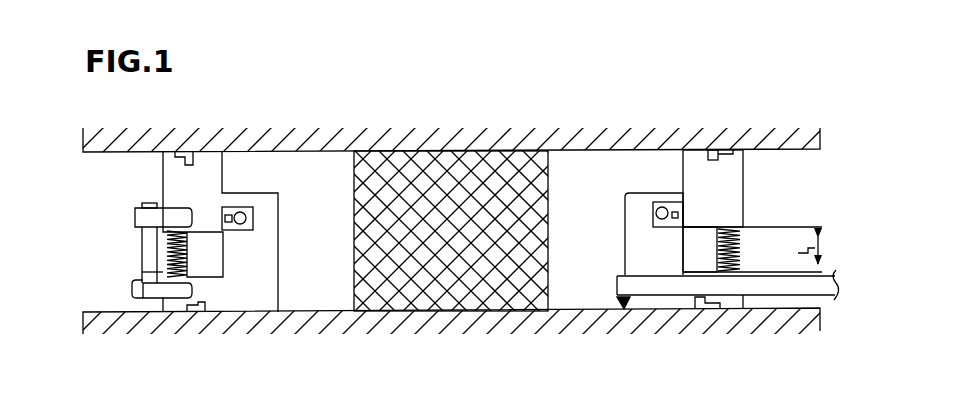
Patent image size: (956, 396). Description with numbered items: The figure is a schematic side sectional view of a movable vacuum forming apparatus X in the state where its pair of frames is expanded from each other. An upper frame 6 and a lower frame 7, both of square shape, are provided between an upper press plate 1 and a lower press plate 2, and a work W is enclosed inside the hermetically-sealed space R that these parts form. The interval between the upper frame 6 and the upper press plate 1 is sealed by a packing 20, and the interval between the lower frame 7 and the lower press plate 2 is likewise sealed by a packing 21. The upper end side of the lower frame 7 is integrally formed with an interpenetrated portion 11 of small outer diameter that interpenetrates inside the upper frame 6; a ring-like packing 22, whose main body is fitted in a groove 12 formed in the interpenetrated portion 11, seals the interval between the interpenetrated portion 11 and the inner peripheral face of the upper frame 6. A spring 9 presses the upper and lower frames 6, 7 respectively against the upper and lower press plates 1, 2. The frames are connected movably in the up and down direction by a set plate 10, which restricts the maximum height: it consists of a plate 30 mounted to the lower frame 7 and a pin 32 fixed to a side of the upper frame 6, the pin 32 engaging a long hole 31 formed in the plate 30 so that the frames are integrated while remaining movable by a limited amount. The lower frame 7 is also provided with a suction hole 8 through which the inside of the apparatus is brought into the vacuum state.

The upper press plate 1 is at (461, 116).
The lower press plate 2 is at (463, 369).
The upper frame 6 is at (723, 216).
The lower frame 7 is at (677, 307).
The suction hole 8 is at (632, 287).
The spring 9 is at (738, 248).
The set plate 10 is at (128, 257).
The interpenetrated portion 11 is at (667, 264).
The groove 12 is at (658, 207).
The packing 20 is at (718, 147).
The packing 21 is at (705, 312).
The packing 22 is at (663, 204).
The plate 30 is at (142, 276).
The long hole 31 is at (150, 247).
The pin 32 is at (152, 222).
The work W is at (447, 231).
The hermetically-sealed space R is at (600, 265).
The movable vacuum forming apparatus X is at (763, 181).